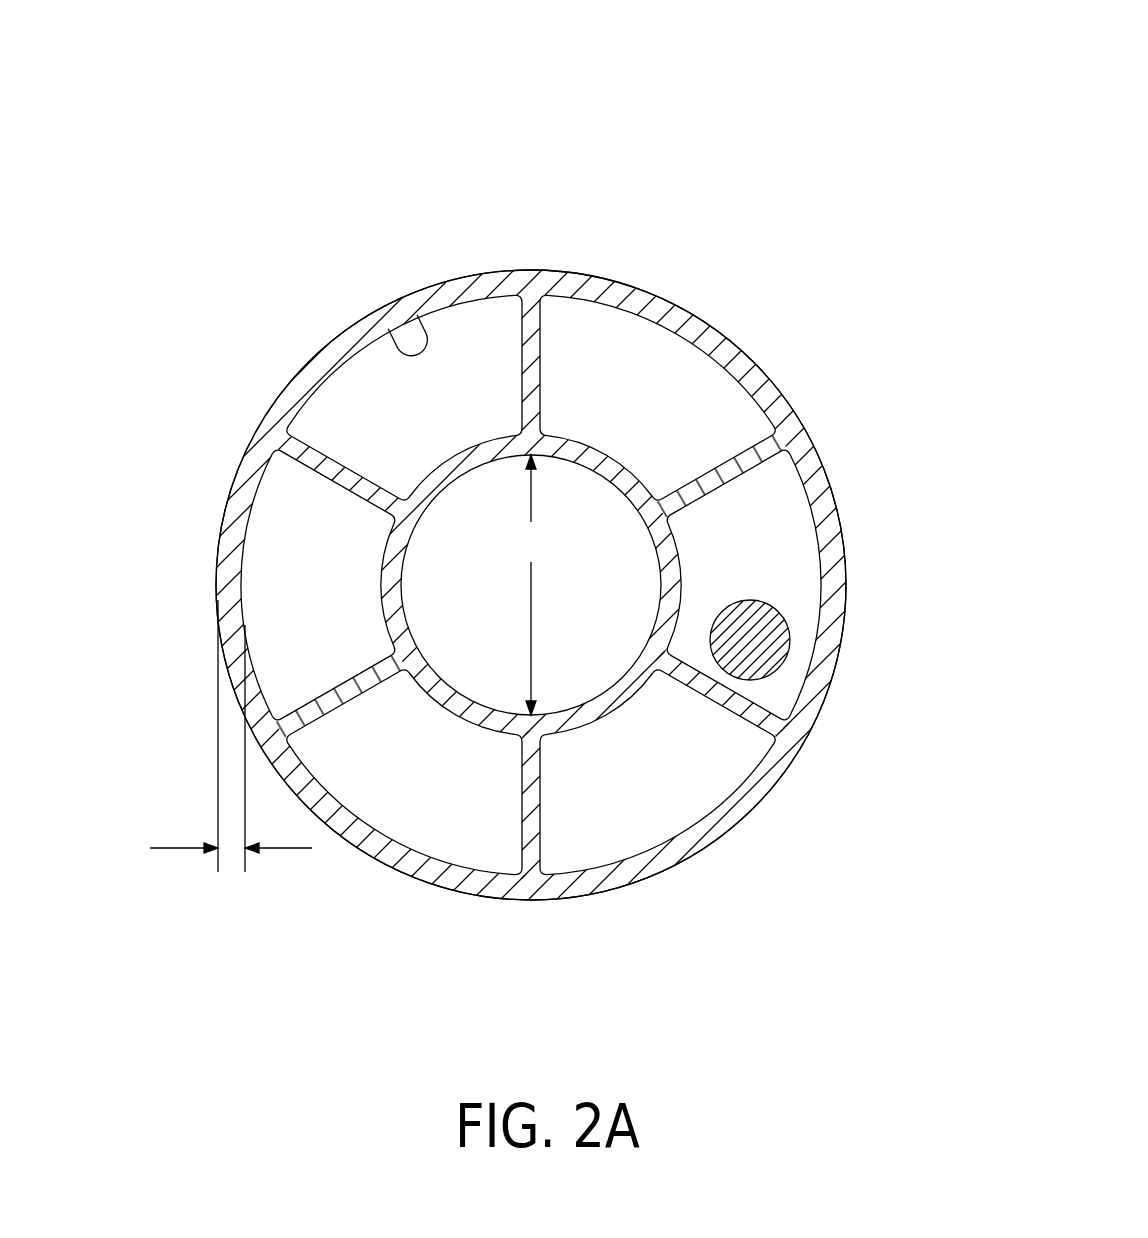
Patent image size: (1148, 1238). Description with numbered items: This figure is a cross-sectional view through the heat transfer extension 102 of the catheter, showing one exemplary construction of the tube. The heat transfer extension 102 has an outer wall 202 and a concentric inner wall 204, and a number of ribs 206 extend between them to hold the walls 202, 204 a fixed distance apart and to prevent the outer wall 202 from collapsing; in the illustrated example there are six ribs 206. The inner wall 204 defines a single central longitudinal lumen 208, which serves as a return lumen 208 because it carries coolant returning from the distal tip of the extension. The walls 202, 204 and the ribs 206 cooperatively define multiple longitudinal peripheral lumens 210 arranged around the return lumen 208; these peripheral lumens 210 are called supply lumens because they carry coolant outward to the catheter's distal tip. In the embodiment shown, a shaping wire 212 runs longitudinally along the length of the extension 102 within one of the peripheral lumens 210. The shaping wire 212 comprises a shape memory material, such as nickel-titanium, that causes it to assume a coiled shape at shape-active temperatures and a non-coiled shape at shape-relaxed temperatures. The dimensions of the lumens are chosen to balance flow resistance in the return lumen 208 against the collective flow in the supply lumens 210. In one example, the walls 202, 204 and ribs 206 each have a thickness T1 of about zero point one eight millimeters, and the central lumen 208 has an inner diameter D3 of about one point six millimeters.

The heat transfer extension 102 is at (815, 127).
The outer wall 202 is at (778, 385).
The inner wall 204 is at (572, 443).
The ribs 206 is at (703, 697).
The return lumen 208 is at (492, 627).
The peripheral lumens 210 is at (417, 328).
The shaping wire 212 is at (780, 677).
The inner diameter D3 is at (529, 585).
The thickness T1 is at (211, 736).